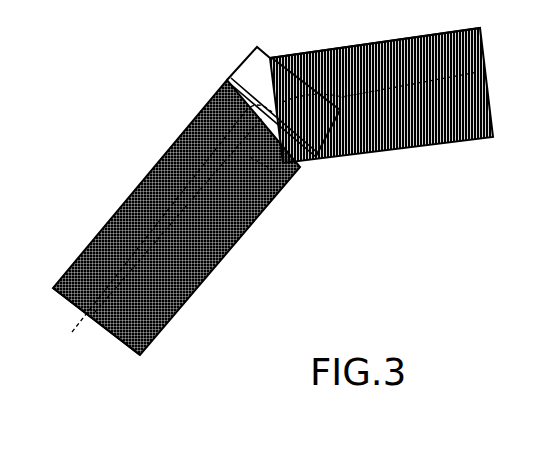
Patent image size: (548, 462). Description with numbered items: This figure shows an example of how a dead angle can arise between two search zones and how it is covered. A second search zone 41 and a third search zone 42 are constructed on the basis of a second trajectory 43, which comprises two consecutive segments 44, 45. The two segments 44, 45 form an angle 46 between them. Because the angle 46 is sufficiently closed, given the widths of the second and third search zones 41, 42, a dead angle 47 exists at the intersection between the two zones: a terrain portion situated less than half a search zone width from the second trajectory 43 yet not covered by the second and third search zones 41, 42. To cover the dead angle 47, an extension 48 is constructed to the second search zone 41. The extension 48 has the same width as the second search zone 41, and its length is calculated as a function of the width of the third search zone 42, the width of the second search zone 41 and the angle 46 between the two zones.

The second search zone 41 is at (247, 234).
The third search zone 42 is at (390, 152).
The second trajectory 43 is at (94, 323).
The segment 44 is at (157, 197).
The segment 45 is at (377, 45).
The angle 46 is at (308, 167).
The dead angle 47 is at (215, 91).
The extension 48 is at (243, 67).